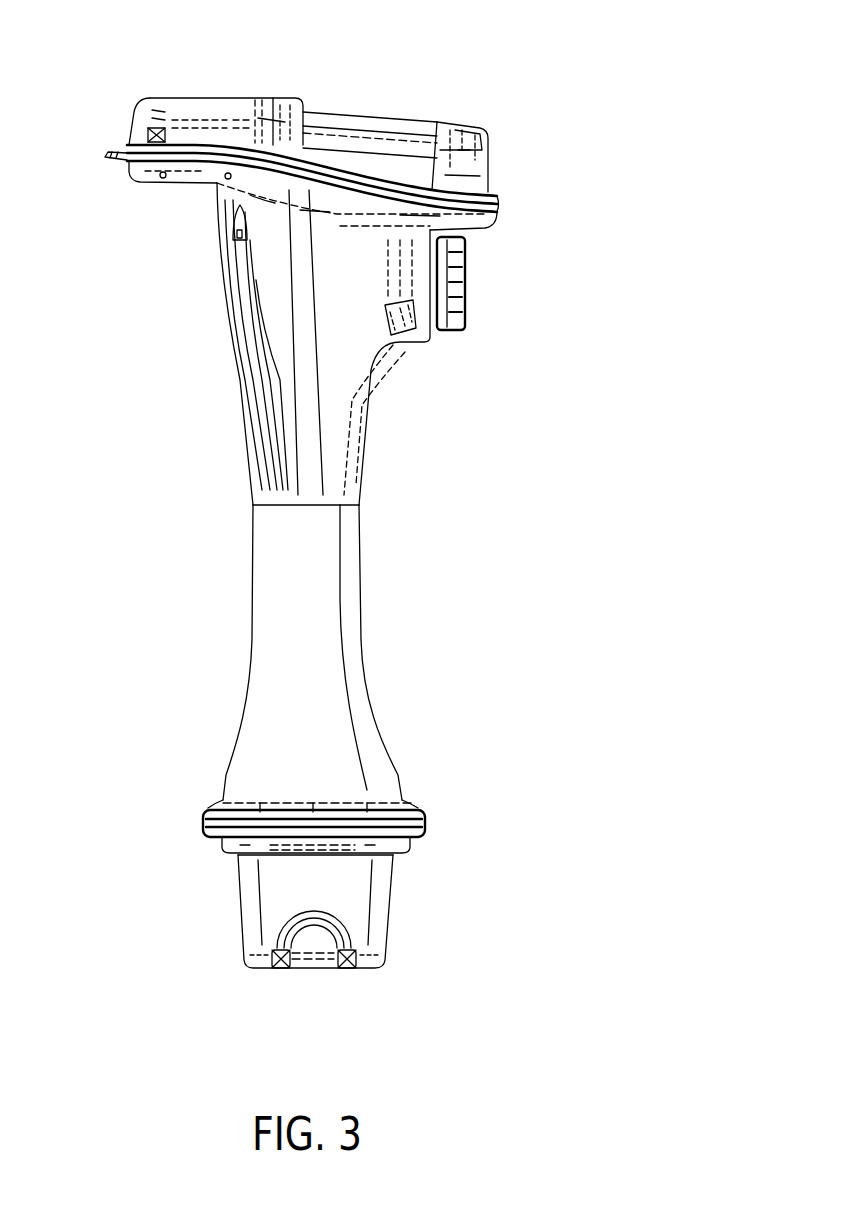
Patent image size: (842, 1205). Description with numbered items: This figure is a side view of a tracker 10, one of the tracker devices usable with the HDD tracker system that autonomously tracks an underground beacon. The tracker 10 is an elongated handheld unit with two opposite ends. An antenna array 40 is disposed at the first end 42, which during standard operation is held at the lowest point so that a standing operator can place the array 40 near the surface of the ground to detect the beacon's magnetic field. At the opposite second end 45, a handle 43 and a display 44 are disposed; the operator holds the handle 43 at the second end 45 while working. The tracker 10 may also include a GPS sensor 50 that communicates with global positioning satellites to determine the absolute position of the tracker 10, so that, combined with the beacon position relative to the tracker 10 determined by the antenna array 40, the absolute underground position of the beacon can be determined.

The tracker 10 is at (545, 110).
The antenna array 40 is at (352, 888).
The first end 42 is at (260, 967).
The handle 43 is at (370, 112).
The display 44 is at (185, 98).
The second end 45 is at (233, 97).
The GPS sensor 50 is at (140, 130).